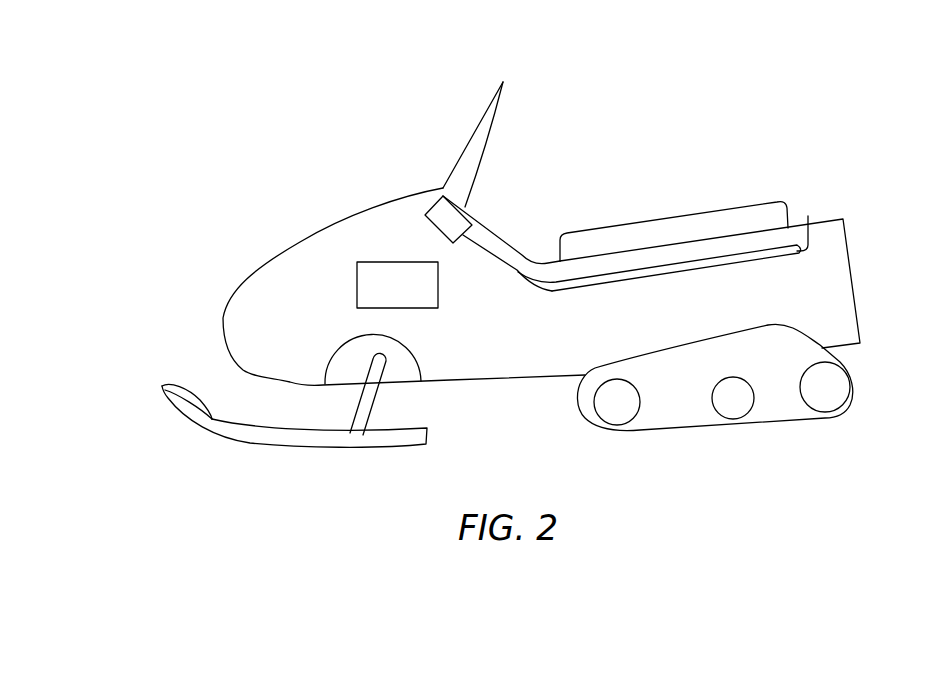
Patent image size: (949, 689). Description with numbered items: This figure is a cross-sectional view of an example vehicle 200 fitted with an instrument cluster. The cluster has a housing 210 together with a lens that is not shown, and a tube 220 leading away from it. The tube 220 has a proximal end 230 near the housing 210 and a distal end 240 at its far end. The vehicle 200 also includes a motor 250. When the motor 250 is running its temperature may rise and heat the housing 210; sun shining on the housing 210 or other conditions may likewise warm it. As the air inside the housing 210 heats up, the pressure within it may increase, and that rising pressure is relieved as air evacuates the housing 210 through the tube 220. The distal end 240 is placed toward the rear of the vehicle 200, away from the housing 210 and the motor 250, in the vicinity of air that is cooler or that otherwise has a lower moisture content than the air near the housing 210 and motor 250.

The vehicle 200 is at (832, 113).
The housing 210 is at (430, 221).
The tube 220 is at (517, 270).
The proximal end 230 is at (482, 240).
The distal end 240 is at (808, 216).
The motor 250 is at (418, 296).